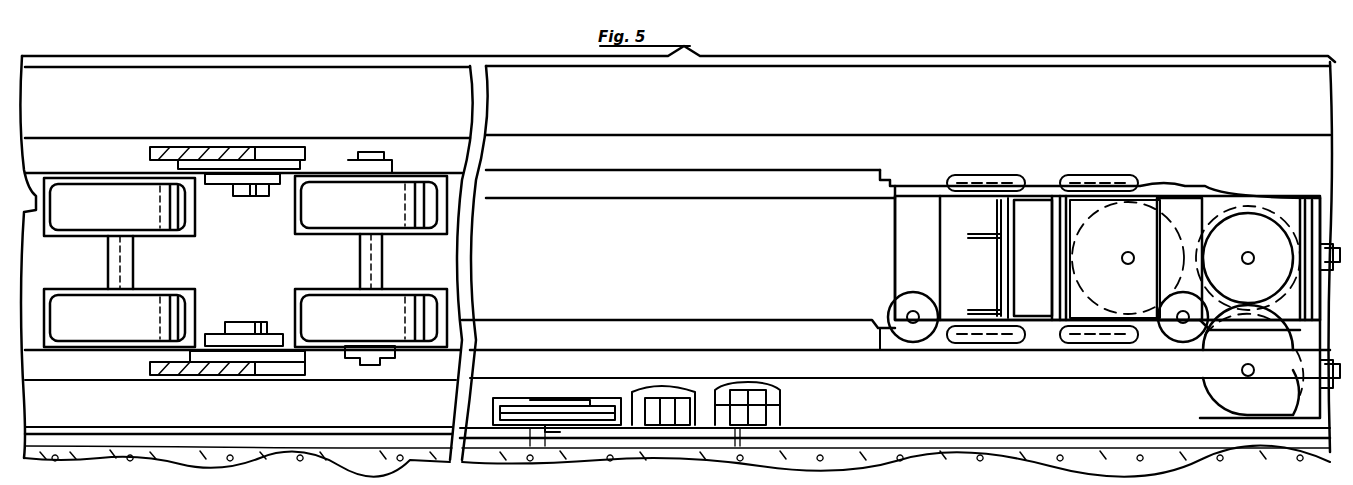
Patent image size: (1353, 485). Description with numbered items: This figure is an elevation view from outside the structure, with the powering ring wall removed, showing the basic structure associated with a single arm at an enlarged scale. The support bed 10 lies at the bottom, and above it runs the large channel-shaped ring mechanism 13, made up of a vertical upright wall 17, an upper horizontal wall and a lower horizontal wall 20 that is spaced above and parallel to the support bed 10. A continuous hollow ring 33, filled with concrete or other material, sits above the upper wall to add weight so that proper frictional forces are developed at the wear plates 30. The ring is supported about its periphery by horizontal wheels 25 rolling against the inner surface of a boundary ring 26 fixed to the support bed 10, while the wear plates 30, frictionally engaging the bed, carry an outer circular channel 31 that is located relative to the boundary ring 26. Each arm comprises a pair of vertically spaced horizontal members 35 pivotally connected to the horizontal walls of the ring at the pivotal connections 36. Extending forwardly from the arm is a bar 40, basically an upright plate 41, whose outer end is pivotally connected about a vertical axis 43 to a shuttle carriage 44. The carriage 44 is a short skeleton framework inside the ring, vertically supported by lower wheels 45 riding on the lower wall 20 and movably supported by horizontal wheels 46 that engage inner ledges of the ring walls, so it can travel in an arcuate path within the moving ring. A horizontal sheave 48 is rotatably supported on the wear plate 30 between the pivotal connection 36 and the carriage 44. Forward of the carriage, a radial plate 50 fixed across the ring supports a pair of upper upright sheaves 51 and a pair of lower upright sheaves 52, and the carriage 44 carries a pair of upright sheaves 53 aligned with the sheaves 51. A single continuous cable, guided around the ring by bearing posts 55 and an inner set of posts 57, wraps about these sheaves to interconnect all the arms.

The support bed 10 is at (345, 440).
The ring mechanism 13 is at (582, 170).
The upright wall 17 is at (765, 257).
The lower horizontal wall 20 is at (938, 345).
The horizontal wheels 25 is at (107, 216).
The boundary ring 26 is at (768, 150).
The wear plates 30 is at (614, 438).
The outer circular channel 31 is at (843, 414).
The continuous hollow ring 33 is at (536, 102).
The horizontal members 35 is at (214, 147).
The pivotal connections 36 is at (246, 192).
The bar 40 is at (986, 246).
The upright plate 41 is at (1042, 270).
The vertical axis 43 is at (1052, 326).
The shuttle carriage 44 is at (893, 232).
The lower wheels 45 is at (890, 305).
The horizontal wheels 46 is at (1050, 175).
The horizontal sheave 48 is at (520, 410).
The radial plate 50 is at (1322, 200).
The upper upright sheaves 51 is at (1285, 200).
The lower upright sheaves 52 is at (1283, 405).
The upright sheaves 53 is at (1136, 259).
The bearing posts 55 is at (752, 392).
The inner set of posts 57 is at (656, 400).